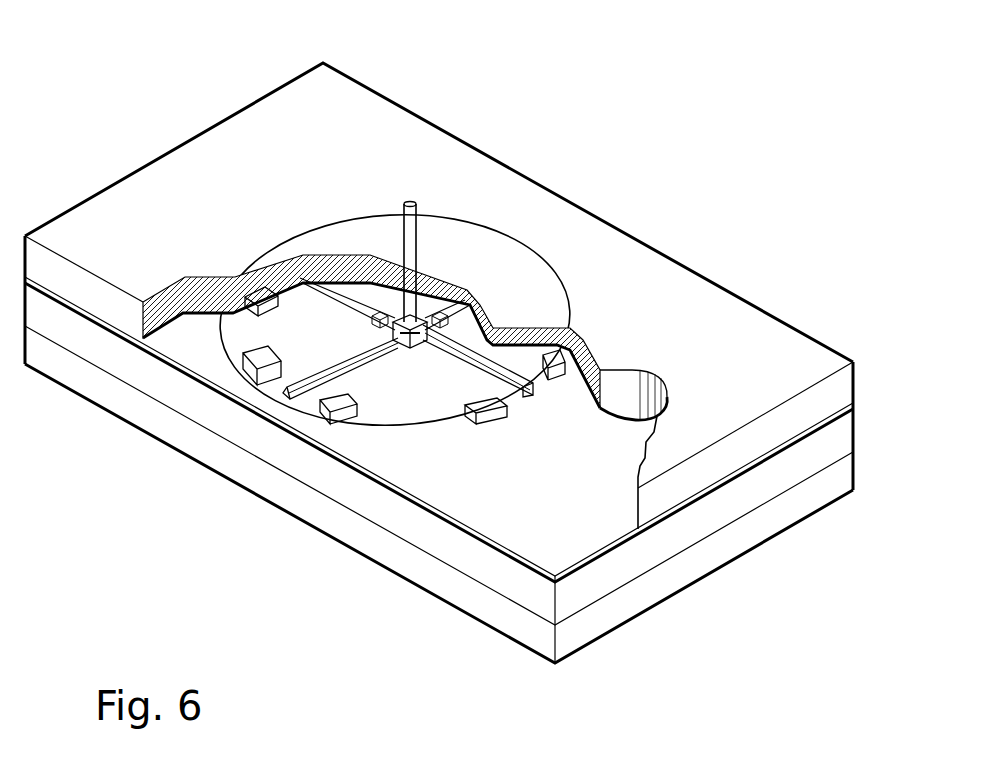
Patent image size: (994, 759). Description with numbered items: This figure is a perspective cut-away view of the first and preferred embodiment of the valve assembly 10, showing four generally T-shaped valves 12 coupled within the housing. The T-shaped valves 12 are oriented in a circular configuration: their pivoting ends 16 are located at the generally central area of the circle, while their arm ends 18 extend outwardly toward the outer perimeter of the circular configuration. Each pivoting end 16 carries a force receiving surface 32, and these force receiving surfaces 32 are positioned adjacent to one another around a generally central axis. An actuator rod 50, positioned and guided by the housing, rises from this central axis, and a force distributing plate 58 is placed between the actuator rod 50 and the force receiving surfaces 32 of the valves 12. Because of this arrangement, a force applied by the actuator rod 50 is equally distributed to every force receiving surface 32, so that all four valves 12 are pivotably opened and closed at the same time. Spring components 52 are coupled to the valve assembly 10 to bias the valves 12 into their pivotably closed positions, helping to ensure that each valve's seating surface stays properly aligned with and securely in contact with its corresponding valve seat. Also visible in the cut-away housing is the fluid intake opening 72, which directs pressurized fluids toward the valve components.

The valve assembly 10 is at (113, 166).
The generally T-shaped valve 12 is at (257, 290).
The pivoting end 16 is at (452, 362).
The arm end 18 is at (552, 363).
The force receiving surface 32 is at (405, 346).
The actuator rod 50 is at (405, 222).
The spring component 52 is at (307, 405).
The force distributing plate 58 is at (412, 333).
The fluid intake opening 72 is at (630, 396).